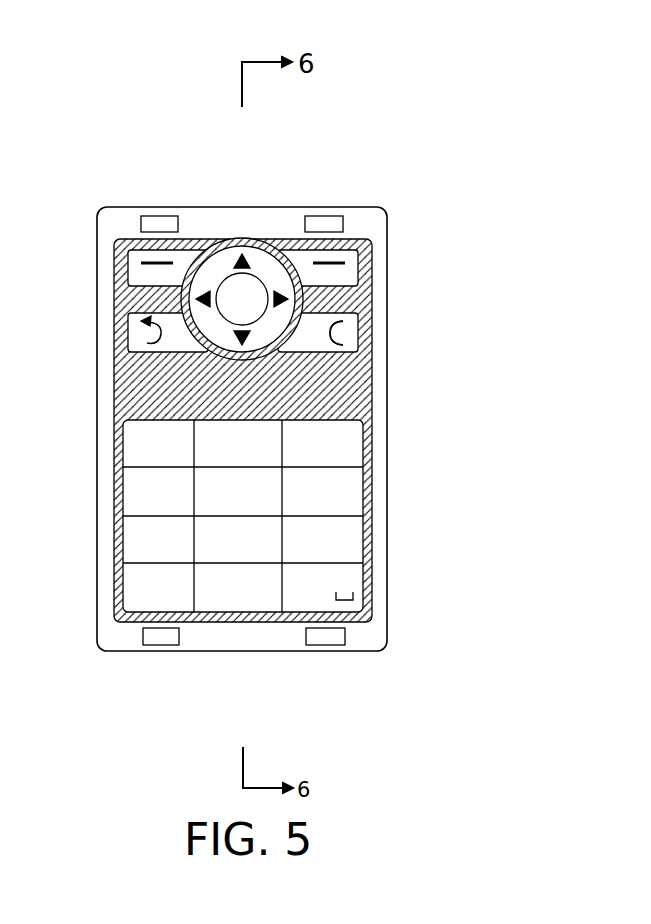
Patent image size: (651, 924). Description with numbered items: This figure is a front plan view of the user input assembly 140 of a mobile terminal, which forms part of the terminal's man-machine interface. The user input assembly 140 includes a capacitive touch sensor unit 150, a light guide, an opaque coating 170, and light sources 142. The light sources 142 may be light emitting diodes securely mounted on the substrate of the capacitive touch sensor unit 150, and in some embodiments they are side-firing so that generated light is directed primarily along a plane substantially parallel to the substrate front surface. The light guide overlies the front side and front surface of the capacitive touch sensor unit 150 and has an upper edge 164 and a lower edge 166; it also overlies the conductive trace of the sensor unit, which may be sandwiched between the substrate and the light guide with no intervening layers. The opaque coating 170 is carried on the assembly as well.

The user input assembly 140 is at (292, 138).
The capacitive touch sensor unit 150 is at (257, 218).
The light sources 142 is at (340, 220).
The upper edge 164 is at (227, 240).
The opaque coating 170 is at (362, 378).
The lower edge 166 is at (267, 623).